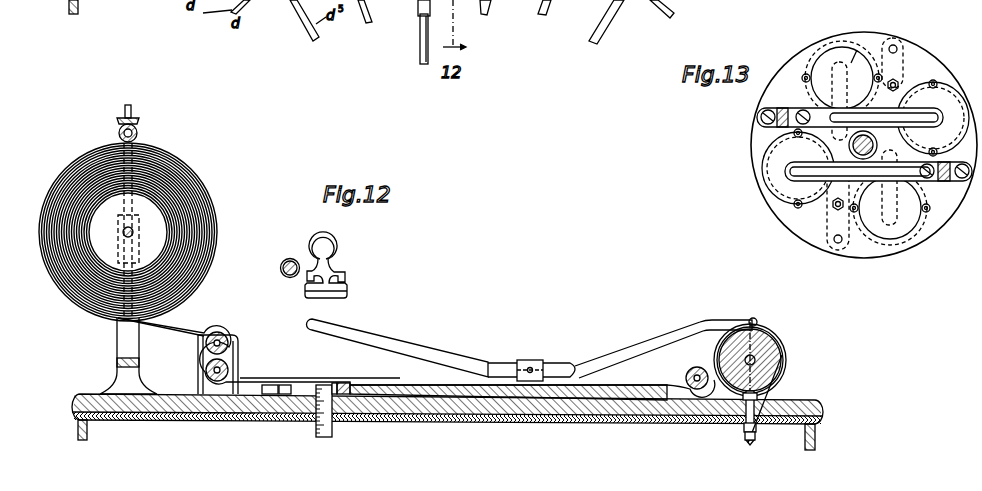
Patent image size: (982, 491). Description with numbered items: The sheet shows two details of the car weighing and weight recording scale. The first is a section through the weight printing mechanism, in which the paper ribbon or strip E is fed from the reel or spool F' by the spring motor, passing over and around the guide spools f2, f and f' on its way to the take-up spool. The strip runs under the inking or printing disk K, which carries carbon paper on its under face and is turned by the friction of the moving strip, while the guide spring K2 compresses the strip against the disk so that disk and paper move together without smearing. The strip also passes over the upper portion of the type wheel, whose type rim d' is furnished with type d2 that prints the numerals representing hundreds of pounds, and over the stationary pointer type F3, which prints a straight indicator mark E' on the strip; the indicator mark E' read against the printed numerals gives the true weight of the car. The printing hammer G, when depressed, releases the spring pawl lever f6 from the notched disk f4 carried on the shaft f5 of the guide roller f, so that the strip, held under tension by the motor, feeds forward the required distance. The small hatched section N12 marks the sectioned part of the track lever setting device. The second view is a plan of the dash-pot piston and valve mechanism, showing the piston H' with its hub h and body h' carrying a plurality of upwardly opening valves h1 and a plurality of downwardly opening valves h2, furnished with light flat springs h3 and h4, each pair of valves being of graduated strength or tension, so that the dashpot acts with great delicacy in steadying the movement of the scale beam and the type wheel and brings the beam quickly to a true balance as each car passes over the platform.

In FIG. 12, the reel or spool F' is at (128, 213).
In FIG. 12, the paper ribbon or strip E is at (416, 345).
In FIG. 12, the guide spool f2 is at (206, 345).
In FIG. 12, the guide spool f is at (495, 360).
In FIG. 12, the inking or printing disk K is at (263, 382).
In FIG. 12, the guide spring K2 is at (287, 381).
In FIG. 12, the type d2 is at (316, 424).
In FIG. 12, the type rim d' is at (342, 371).
In FIG. 12, the stationary pointer type F3 is at (352, 386).
In FIG. 12, the wire section N12 is at (290, 258).
In FIG. 12, the printing hammer G is at (336, 258).
In FIG. 12, the spring pawl lever f6 is at (675, 334).
In FIG. 12, the guide spool f' is at (694, 366).
In FIG. 12, the notched disk f4 is at (783, 343).
In FIG. 12, the shaft f5 is at (754, 356).
In FIG. 12, the indicator mark E' is at (766, 441).
In FIG. 13, the piston H' is at (864, 139).
In FIG. 13, the central hub h is at (871, 79).
In FIG. 13, the right opening h' is at (935, 166).
In FIG. 13, the upwardly opening valves h1 is at (770, 190).
In FIG. 13, the downwardly opening valves h2 is at (827, 63).
In FIG. 13, the light flat spring h3 is at (864, 144).
In FIG. 13, the light flat spring h4 is at (863, 42).